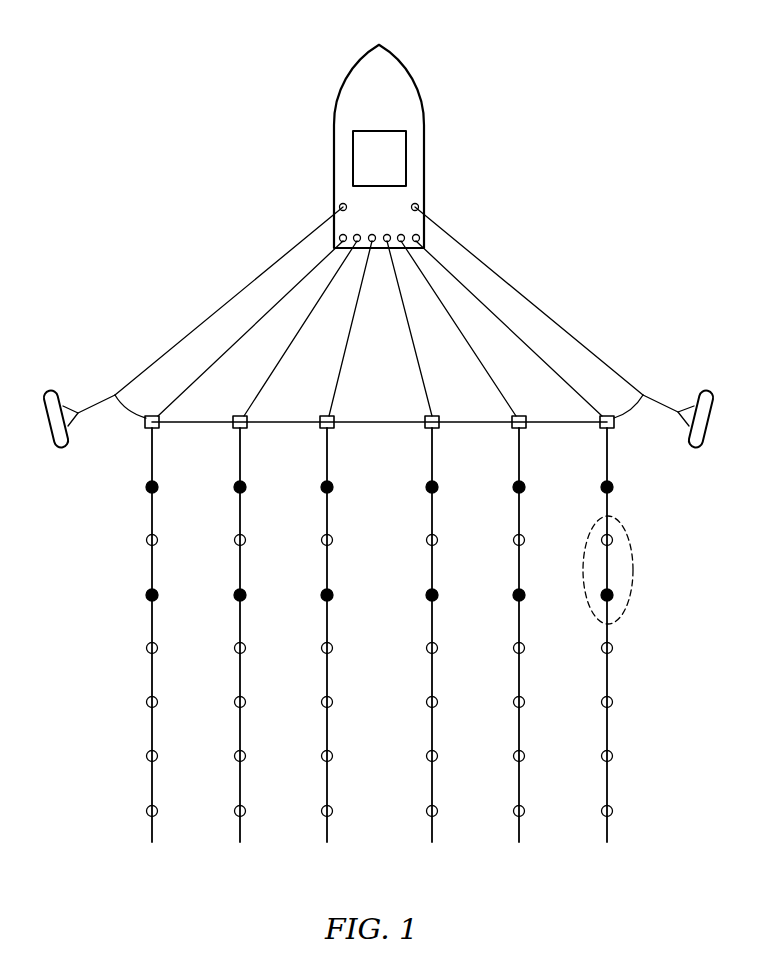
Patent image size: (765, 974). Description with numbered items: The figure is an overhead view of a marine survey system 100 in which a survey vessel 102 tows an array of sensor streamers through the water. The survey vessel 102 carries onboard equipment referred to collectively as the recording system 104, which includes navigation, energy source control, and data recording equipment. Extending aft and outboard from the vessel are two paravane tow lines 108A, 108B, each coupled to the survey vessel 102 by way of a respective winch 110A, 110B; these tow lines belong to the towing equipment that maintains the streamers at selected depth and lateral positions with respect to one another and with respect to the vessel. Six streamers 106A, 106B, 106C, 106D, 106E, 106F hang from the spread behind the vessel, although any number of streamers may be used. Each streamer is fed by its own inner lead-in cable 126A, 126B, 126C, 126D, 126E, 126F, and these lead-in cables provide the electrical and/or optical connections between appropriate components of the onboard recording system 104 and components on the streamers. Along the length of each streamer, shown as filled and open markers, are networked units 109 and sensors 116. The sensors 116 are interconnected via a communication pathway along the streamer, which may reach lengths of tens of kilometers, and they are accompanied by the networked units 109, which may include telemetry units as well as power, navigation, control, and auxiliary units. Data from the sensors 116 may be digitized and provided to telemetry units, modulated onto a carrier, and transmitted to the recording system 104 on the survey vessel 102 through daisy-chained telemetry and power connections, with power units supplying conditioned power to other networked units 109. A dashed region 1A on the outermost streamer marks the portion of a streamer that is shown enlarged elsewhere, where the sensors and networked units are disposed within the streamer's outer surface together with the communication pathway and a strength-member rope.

The marine survey system 100 is at (143, 80).
The survey vessel 102 is at (338, 95).
The recording system 104 is at (406, 147).
The winch 110A is at (340, 204).
The winch 110B is at (418, 204).
The paravane tow line 108A is at (315, 232).
The paravane tow line 108B is at (530, 303).
The inner lead-in cable 126A is at (303, 282).
The inner lead-in cable 126B is at (313, 318).
The inner lead-in cable 126C is at (346, 360).
The inner lead-in cable 126D is at (398, 283).
The inner lead-in cable 126E is at (441, 305).
The inner lead-in cable 126F is at (532, 348).
The sensor streamer 106A is at (151, 842).
The sensor streamer 106B is at (239, 842).
The sensor streamer 106C is at (327, 842).
The sensor streamer 106D is at (432, 842).
The sensor streamer 106E is at (519, 842).
The sensor streamer 106F is at (607, 842).
The networked unit 109 is at (147, 491).
The sensor 116 is at (146, 543).
The FIG. 1A detail region 1A is at (633, 570).